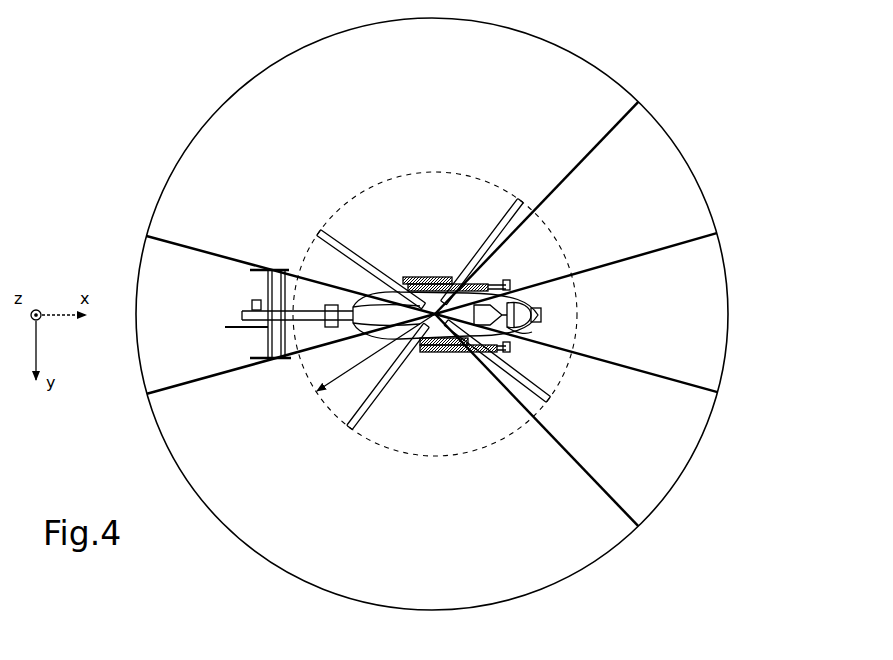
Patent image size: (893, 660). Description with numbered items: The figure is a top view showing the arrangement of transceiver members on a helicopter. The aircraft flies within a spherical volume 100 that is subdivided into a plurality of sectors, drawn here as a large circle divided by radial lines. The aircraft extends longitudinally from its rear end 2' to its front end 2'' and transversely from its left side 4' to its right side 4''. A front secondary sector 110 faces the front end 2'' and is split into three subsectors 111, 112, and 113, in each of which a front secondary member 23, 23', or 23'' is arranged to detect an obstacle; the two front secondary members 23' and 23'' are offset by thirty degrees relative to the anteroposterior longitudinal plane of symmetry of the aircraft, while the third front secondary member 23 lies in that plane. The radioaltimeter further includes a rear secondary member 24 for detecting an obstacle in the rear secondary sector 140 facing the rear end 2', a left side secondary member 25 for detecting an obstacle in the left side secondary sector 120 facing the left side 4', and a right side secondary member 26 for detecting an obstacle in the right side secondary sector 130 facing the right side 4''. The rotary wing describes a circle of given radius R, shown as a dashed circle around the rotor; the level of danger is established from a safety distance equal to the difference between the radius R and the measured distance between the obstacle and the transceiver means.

The spherical volume 100 is at (208, 118).
The front secondary sector 110 is at (764, 312).
The subsector 111 is at (652, 443).
The subsector 112 is at (700, 325).
The subsector 113 is at (652, 209).
The left side secondary sector 120 is at (388, 114).
The right side secondary sector 130 is at (388, 533).
The rear secondary sector 140 is at (192, 327).
The rear end 2' is at (243, 314).
The front end 2'' is at (567, 327).
The left side 4' is at (345, 260).
The right side 4'' is at (341, 376).
The front secondary member 23 is at (578, 300).
The front secondary member 23' is at (544, 248).
The front secondary member 23'' is at (558, 370).
The rear secondary member 24 is at (252, 305).
The left side secondary member 25 is at (455, 258).
The right side secondary member 26 is at (443, 353).
The radius R is at (376, 353).